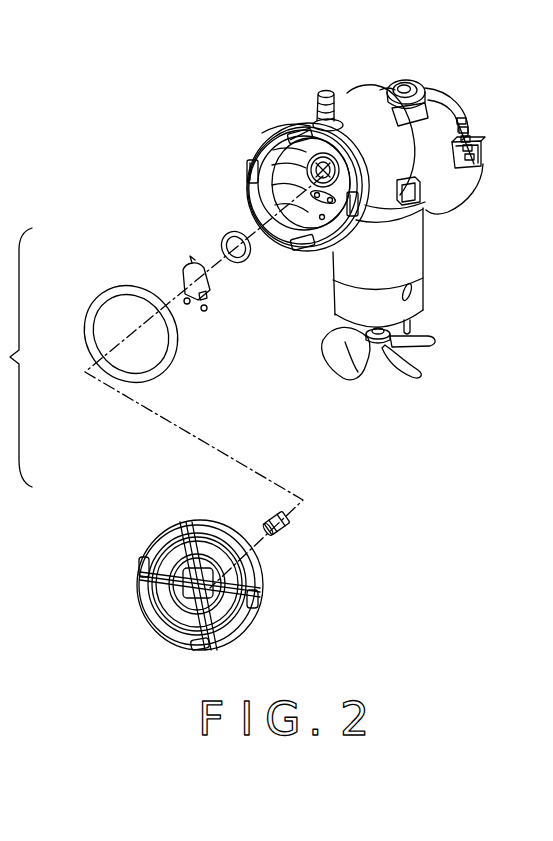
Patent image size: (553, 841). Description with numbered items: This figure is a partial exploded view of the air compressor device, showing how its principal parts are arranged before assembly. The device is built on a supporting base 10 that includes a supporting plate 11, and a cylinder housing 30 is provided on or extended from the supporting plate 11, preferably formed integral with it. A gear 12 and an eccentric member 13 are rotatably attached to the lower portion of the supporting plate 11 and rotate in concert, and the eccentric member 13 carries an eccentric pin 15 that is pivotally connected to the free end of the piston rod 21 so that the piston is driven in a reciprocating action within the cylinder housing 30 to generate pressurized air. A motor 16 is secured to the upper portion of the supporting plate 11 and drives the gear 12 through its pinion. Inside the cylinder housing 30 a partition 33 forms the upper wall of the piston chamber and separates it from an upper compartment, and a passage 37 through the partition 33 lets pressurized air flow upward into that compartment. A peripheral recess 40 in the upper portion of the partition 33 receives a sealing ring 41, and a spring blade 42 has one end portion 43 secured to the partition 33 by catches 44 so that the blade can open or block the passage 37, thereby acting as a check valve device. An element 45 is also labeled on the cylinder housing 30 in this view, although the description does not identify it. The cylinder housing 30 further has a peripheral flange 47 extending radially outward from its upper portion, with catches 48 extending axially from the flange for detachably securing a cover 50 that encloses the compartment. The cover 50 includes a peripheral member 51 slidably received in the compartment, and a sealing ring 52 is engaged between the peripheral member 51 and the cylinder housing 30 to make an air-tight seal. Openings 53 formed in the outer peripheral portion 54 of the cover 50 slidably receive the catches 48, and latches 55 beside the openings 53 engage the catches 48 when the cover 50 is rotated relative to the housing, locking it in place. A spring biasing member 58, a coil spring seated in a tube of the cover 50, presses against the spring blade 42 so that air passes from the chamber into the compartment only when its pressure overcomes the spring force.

The supporting base 10 is at (436, 181).
The supporting plate 11 is at (468, 163).
The gear 12 is at (470, 128).
The eccentric member 13 is at (437, 103).
The eccentric pin 15 is at (404, 82).
The motor 16 is at (407, 265).
The piston rod 21 is at (387, 90).
The cylinder housing 30 is at (350, 110).
The partition 33 is at (283, 130).
The passage 37 is at (272, 158).
The peripheral recess 40 is at (250, 160).
The sealing ring 41 is at (226, 240).
The spring blade 42 is at (186, 277).
The end portion 43 is at (206, 310).
The catches 44 is at (315, 178).
The outlet nozzle 45 is at (318, 120).
The peripheral flange 47 is at (278, 133).
The catches 48 is at (312, 240).
The cover 50 is at (172, 532).
The peripheral member 51 is at (253, 557).
The sealing ring 52 is at (102, 295).
The openings 53 is at (153, 597).
The outer peripheral portion 54 is at (260, 603).
The latches 55 is at (258, 612).
The spring biasing member 58 is at (268, 516).